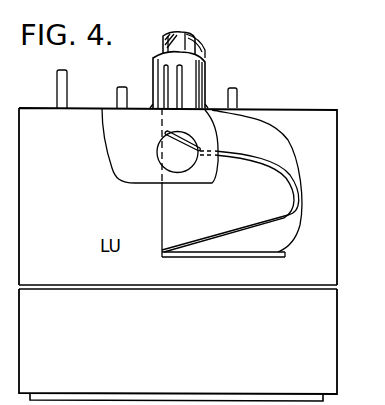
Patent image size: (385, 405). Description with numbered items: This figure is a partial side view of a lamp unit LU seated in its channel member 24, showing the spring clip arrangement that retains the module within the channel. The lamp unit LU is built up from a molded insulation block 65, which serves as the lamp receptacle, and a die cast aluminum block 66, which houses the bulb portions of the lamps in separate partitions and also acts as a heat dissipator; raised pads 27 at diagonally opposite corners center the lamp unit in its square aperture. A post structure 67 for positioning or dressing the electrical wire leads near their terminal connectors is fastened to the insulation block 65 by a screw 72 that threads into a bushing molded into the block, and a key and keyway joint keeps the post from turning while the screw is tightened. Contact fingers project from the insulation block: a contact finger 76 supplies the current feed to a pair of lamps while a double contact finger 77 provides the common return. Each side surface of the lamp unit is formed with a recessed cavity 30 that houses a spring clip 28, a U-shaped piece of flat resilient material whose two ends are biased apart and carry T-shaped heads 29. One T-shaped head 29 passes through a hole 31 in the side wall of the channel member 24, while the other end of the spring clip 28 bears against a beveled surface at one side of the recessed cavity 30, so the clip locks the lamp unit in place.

The channel member 24 is at (107, 160).
The raised pads 27 is at (158, 395).
The spring clips 28 is at (290, 168).
The T-shaped heads 29 is at (200, 145).
The recessed cavity 30 is at (260, 146).
The hole 31 is at (190, 166).
The molded insulation block 65 is at (328, 245).
The die cast aluminum block 66 is at (337, 330).
The post structure 67 is at (200, 70).
The screw 72 is at (195, 39).
The contact finger 76 is at (117, 92).
The double contact finger 77 is at (57, 82).